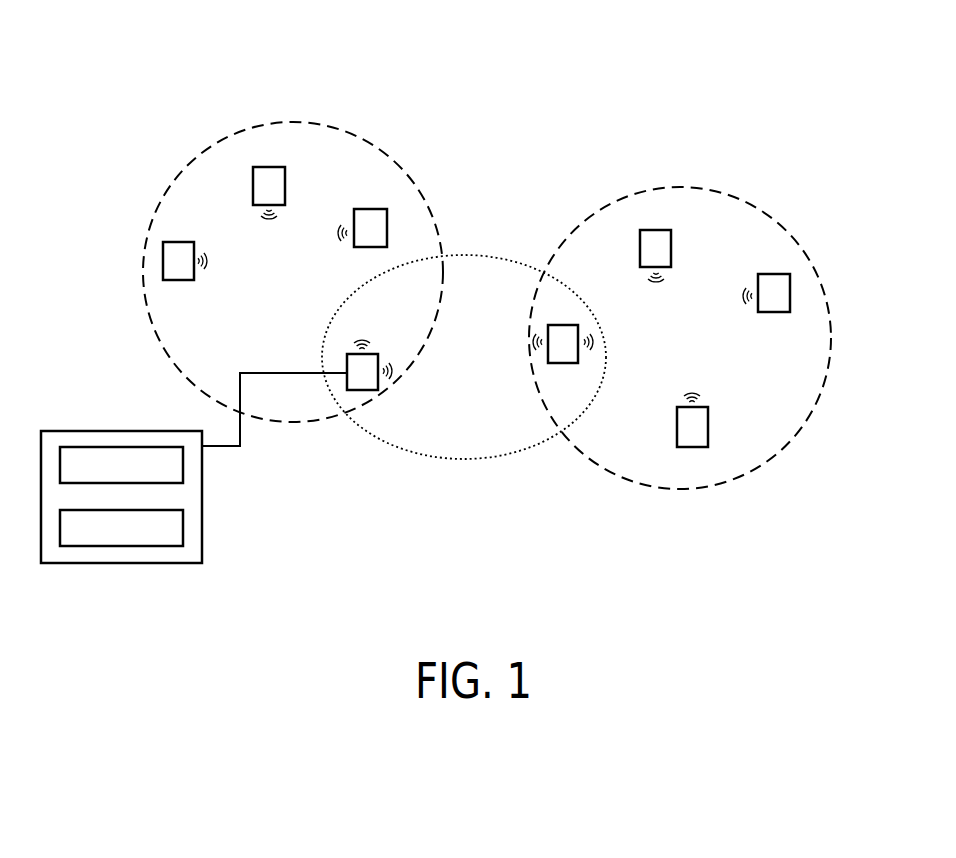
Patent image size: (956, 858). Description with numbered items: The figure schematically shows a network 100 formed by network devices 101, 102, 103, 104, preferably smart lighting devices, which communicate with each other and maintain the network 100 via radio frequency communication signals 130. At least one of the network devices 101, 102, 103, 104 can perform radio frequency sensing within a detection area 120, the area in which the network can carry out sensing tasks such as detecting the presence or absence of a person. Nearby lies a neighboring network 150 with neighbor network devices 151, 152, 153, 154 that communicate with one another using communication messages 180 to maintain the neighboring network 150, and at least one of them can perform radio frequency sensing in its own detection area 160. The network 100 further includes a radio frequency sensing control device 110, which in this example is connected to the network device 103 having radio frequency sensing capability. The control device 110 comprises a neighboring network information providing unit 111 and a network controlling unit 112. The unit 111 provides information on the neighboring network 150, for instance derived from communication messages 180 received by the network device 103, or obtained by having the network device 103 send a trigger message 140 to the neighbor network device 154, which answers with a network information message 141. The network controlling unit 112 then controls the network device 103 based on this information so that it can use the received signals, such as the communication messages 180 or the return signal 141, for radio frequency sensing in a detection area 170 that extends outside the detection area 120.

The network 100 is at (324, 96).
The network device 101 is at (285, 172).
The network device 102 is at (387, 228).
The network device 103 is at (372, 390).
The network device 104 is at (178, 242).
The radio frequency sensing control device 110 is at (173, 565).
The neighboring network information providing unit 111 is at (183, 460).
The network controlling unit 112 is at (183, 522).
The detection area 120 is at (203, 142).
The communication signals 130 is at (212, 243).
The trigger message 140 is at (404, 372).
The network information message 141 is at (526, 350).
The neighboring network 150 is at (764, 173).
The neighbor network device 151 is at (651, 230).
The neighbor network device 152 is at (773, 274).
The neighbor network device 153 is at (693, 448).
The neighbor network device 154 is at (560, 365).
The detection area 160 is at (766, 460).
The detection area 170 is at (511, 262).
The communication messages 180 is at (736, 297).